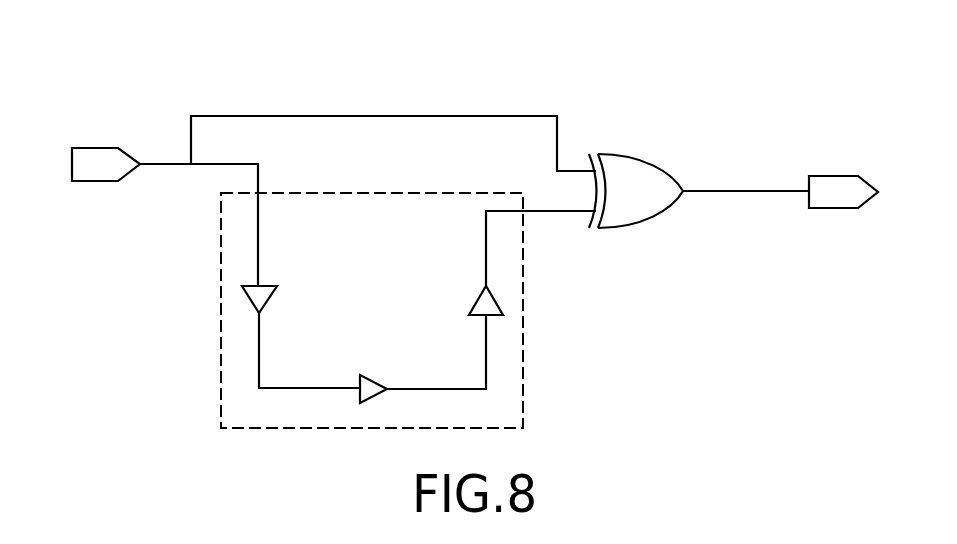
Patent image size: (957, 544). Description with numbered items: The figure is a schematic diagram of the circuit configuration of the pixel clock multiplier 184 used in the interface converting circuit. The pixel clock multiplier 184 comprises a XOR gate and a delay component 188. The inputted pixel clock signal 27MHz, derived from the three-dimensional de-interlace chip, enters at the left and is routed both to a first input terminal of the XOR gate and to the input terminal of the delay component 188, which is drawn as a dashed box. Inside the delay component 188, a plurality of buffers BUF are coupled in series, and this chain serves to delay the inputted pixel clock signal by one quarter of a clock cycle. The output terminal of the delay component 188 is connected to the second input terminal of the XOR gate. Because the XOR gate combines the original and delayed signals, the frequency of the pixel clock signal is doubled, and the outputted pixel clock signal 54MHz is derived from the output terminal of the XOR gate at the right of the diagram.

The pixel clock multiplier 184 is at (474, 222).
The delay component 188 is at (409, 310).
The buffer BUF is at (372, 344).
The inputted pixel clock signal 27MHz is at (105, 184).
The outputted pixel clock signal 54MHz is at (842, 211).